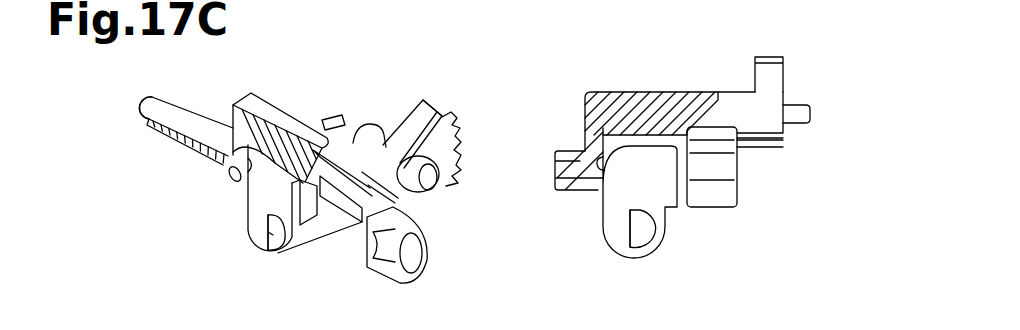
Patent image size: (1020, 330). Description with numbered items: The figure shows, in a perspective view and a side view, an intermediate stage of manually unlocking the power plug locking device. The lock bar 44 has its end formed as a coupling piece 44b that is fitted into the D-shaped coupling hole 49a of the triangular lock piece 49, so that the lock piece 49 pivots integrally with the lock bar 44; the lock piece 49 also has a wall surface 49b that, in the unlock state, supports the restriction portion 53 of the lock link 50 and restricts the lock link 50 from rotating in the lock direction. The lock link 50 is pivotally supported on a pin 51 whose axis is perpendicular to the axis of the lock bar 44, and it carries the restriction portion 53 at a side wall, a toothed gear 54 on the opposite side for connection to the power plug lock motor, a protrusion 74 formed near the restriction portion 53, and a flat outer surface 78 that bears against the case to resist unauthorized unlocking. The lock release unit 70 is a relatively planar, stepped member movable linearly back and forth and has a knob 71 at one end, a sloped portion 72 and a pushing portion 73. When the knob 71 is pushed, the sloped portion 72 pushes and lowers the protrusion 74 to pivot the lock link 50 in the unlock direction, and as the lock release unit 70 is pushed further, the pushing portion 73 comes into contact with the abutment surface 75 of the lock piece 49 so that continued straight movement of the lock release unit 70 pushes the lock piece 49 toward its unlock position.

The lock bar 44 is at (353, 214).
The coupling piece 44b is at (277, 244).
The lock piece 49 is at (247, 204).
The coupling hole 49a is at (267, 230).
The wall surface 49b is at (321, 216).
The lock link 50 is at (384, 140).
The pin 51 is at (403, 200).
The restriction portion 53 is at (358, 228).
The gear 54 is at (460, 133).
The lock release unit 70 is at (183, 97).
The knob 71 is at (152, 100).
The sloped portion 72 is at (308, 119).
The pushing portion 73 is at (228, 174).
The protrusion 74 is at (352, 140).
The abutment surface 75 is at (247, 186).
The outer surface 78 is at (432, 100).